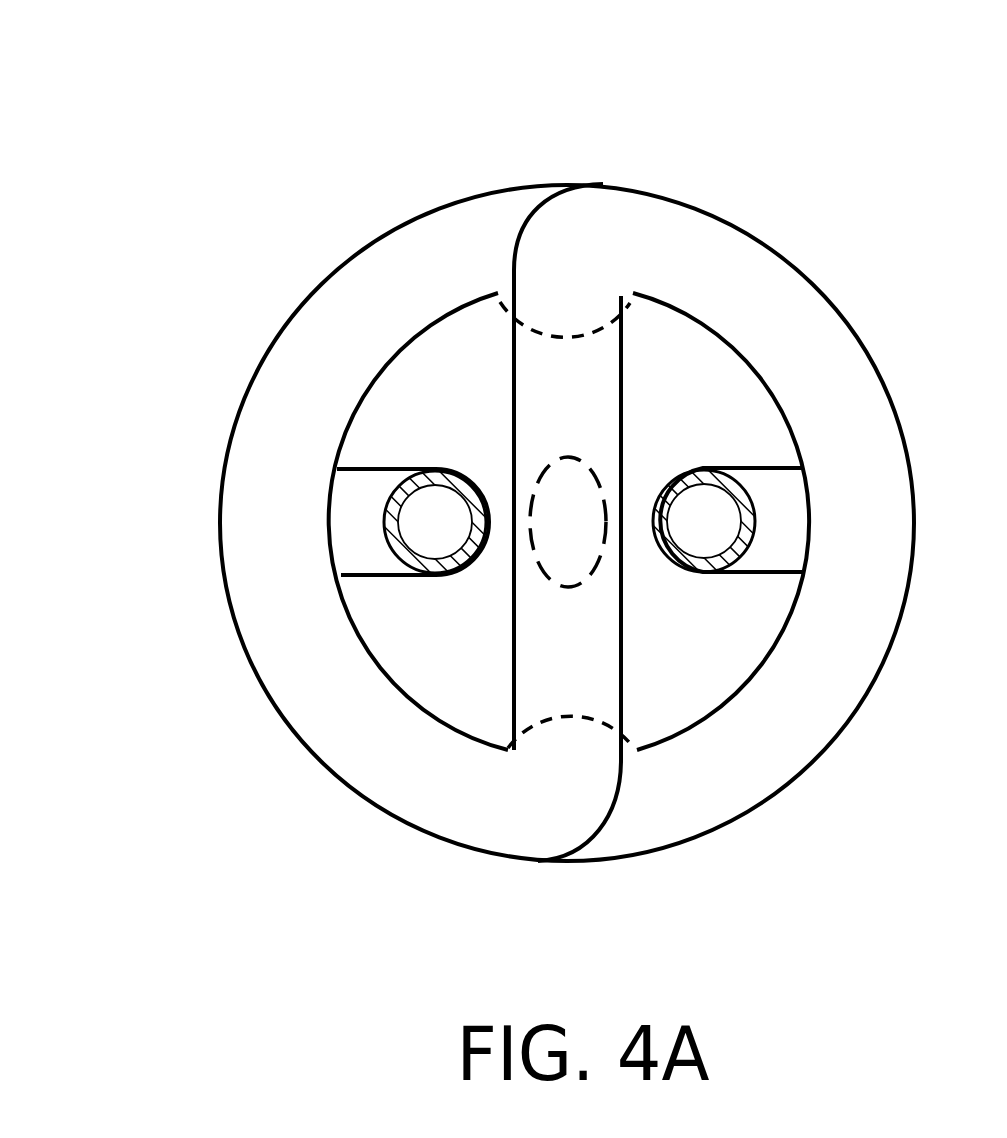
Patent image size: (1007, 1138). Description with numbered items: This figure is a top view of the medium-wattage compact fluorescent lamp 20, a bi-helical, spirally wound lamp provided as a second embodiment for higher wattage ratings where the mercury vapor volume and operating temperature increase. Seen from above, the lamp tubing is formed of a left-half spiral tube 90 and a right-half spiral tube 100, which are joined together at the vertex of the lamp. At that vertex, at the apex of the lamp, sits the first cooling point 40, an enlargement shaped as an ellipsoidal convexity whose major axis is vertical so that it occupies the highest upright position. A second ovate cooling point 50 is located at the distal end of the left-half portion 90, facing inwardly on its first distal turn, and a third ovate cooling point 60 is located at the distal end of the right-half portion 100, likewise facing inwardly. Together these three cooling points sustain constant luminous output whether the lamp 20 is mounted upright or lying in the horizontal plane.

The medium-wattage compact fluorescent lamp 20 is at (172, 142).
The first cooling point 40 is at (592, 537).
The second ovate cooling point 50 is at (568, 335).
The third ovate cooling point 60 is at (572, 722).
The left-half spiral tube 90 is at (255, 536).
The right-half spiral tube 100 is at (828, 536).